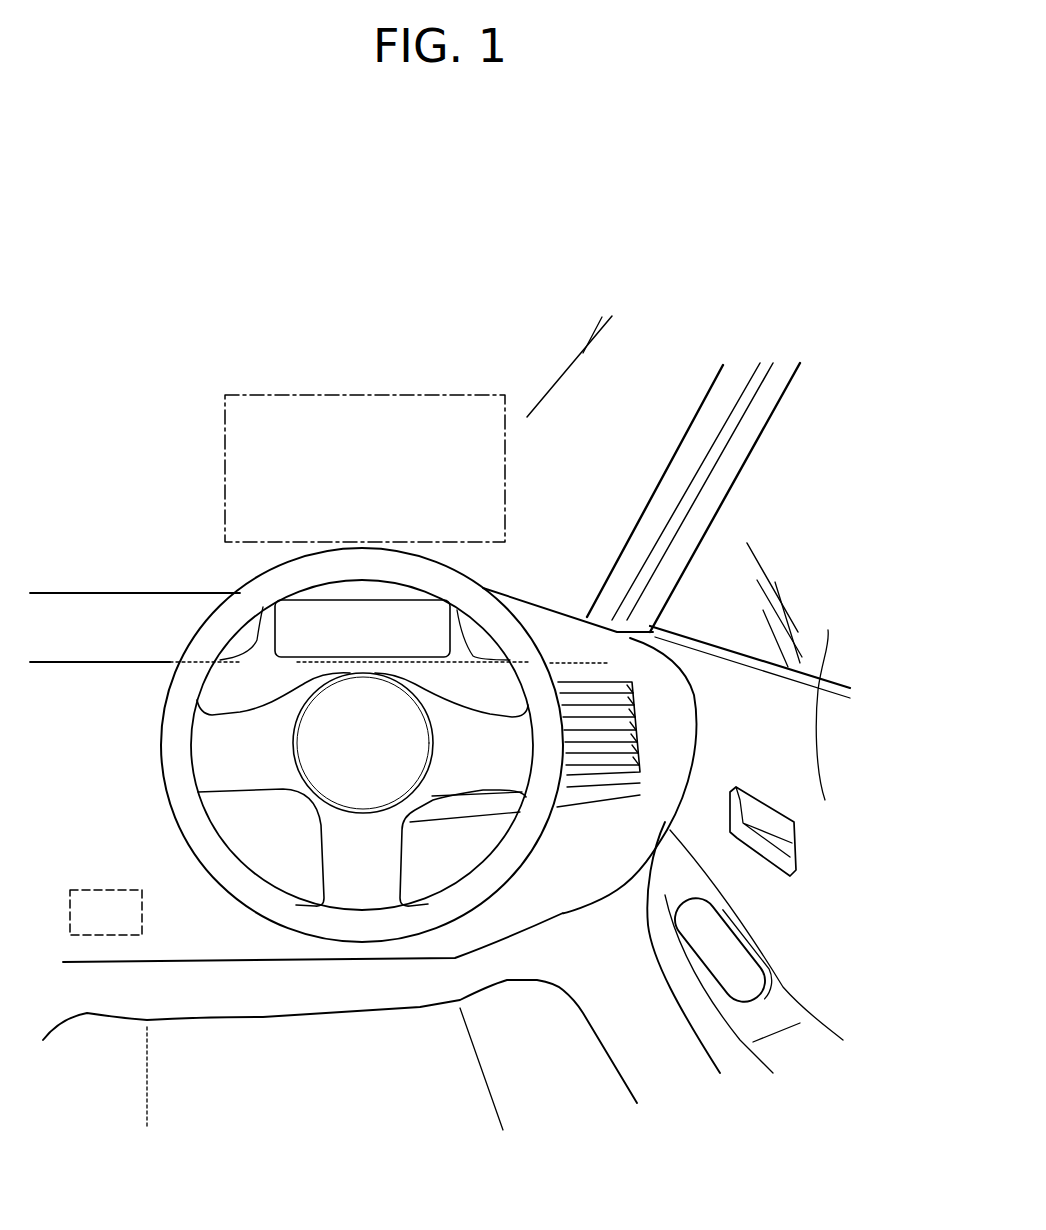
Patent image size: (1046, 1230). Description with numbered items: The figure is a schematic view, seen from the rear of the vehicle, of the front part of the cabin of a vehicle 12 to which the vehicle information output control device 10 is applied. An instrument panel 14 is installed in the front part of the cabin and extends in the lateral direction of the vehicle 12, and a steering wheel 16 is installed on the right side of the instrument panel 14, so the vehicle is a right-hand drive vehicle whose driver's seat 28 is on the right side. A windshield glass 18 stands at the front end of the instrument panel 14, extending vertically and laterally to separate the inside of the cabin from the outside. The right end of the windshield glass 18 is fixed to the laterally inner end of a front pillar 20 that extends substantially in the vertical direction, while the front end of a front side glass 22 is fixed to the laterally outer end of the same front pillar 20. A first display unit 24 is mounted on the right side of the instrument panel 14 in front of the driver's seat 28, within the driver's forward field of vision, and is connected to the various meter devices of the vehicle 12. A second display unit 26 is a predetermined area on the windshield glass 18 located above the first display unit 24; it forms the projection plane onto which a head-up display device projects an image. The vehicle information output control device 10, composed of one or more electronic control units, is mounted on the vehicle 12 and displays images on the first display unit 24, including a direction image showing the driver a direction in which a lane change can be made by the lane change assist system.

The vehicle information output control device 10 is at (108, 890).
The vehicle 12 is at (296, 272).
The instrument panel 14 is at (563, 913).
The steering wheel 16 is at (535, 637).
The windshield glass 18 is at (623, 465).
The front pillar 20 is at (706, 397).
The front side glass 22 is at (750, 709).
The first display unit 24 is at (315, 633).
The second display unit 26 is at (343, 394).
The driver's seat 28 is at (270, 1012).